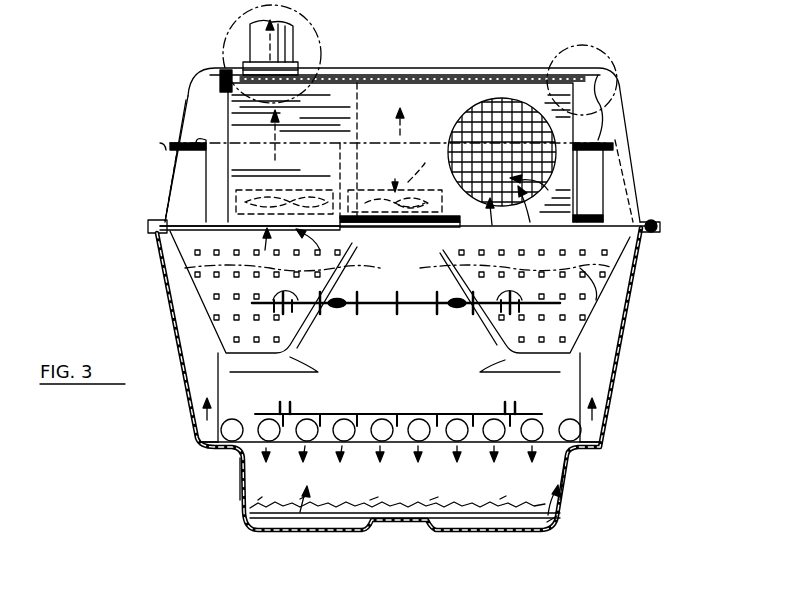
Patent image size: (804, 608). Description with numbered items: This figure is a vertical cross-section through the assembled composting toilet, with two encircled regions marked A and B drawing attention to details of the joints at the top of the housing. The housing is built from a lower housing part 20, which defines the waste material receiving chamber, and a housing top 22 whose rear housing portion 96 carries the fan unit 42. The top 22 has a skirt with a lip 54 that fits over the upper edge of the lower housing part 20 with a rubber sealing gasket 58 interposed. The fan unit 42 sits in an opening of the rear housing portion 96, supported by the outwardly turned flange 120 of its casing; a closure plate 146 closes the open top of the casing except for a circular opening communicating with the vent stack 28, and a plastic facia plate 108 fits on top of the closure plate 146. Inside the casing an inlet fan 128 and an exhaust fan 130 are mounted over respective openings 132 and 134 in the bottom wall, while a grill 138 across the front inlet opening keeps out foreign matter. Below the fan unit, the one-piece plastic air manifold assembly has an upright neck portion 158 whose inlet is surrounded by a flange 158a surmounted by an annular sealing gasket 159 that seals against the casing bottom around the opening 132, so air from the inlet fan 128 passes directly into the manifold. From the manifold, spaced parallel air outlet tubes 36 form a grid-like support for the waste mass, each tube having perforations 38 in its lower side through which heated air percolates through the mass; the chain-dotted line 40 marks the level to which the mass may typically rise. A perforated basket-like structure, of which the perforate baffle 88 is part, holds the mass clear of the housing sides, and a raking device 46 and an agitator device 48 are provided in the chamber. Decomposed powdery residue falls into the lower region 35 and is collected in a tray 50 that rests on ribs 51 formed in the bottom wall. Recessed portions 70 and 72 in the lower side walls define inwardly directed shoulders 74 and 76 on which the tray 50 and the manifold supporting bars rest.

The lower housing part 20 is at (618, 388).
The housing top 22 is at (626, 88).
The vent stack 28 is at (250, 38).
The lower region of the waste material receiving chamber 35 is at (248, 503).
The air outlet tubes 36 is at (345, 418).
The perforations 38 is at (418, 462).
The mass level line 40 is at (606, 290).
The fan unit 42 is at (461, 68).
The raking device 46 is at (441, 414).
The agitator device 48 is at (391, 311).
The tray 50 is at (565, 492).
The ribs 51 is at (428, 522).
The lip 54 is at (660, 232).
The rubber sealing gasket 58 is at (648, 218).
The recessed portion 70 is at (233, 488).
The recessed portion 72 is at (562, 508).
The shoulder 74 is at (215, 452).
The shoulder 76 is at (578, 455).
The perforate baffle 88 is at (574, 330).
The rear housing portion 96 is at (178, 103).
The facia plate 108 is at (403, 75).
The flange 120 is at (407, 83).
The inlet fan 128 is at (420, 196).
The exhaust fan 130 is at (320, 186).
The opening 132 is at (368, 228).
The opening 134 is at (248, 230).
The grill 138 is at (468, 118).
The closure plate 146 is at (330, 78).
The neck portion 158 is at (400, 279).
The flange 158a is at (496, 347).
The annular sealing gasket 159 is at (380, 210).
The detail A is at (316, 35).
The detail B is at (600, 50).